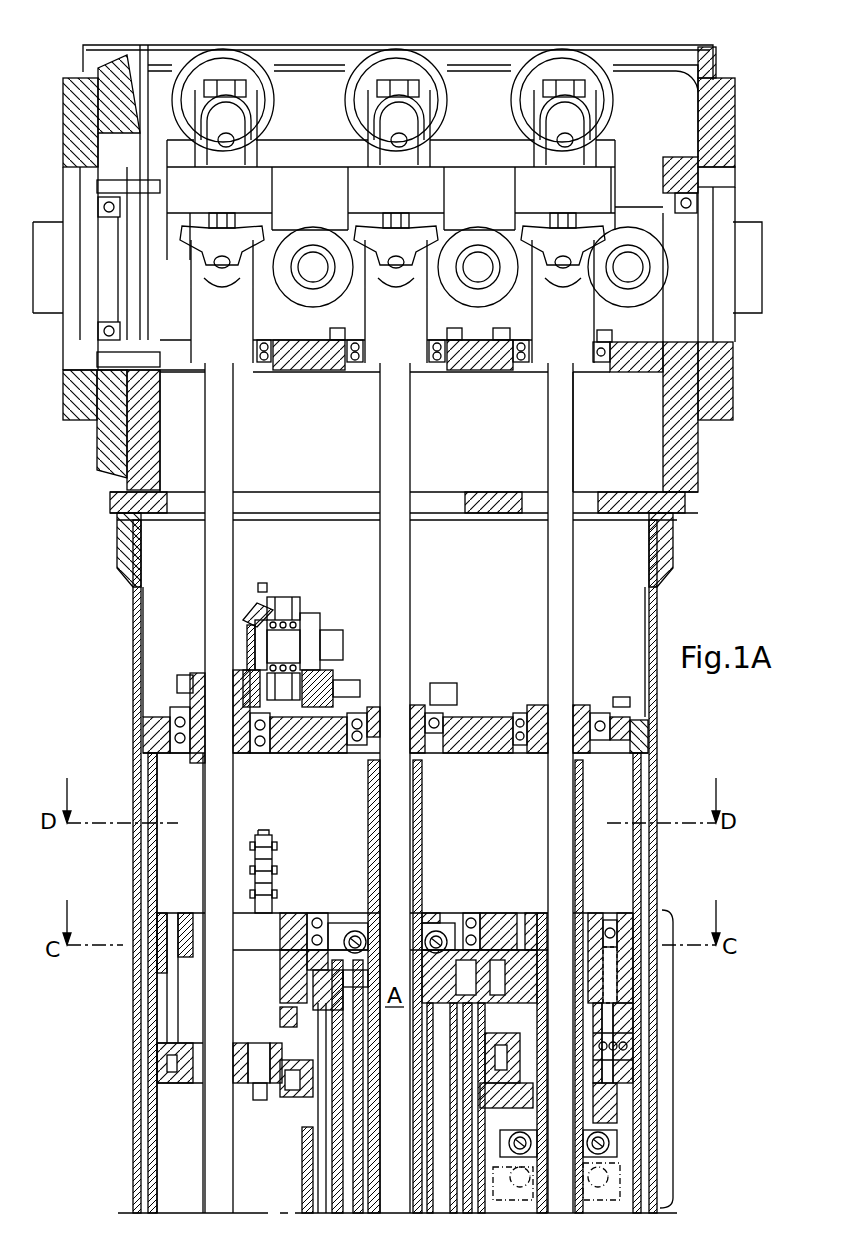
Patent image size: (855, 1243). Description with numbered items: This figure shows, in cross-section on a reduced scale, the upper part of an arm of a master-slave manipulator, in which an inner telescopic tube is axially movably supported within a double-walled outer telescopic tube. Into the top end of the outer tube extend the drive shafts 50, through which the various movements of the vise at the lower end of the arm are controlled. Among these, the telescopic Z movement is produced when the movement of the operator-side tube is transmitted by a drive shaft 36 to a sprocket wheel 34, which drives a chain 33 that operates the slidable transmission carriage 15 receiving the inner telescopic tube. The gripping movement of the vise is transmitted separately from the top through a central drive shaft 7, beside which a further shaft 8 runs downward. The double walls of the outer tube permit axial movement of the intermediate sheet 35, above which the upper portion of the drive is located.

The drive shafts 50 is at (562, 113).
The sprocket wheel 34 is at (262, 583).
The drive shaft 36 is at (213, 617).
The central drive shaft 7 is at (406, 598).
The right spindle shaft 8 is at (571, 611).
The intermediate sheet 35 is at (302, 763).
The chain 33 is at (278, 851).
The transmission carriage 15 is at (673, 1058).